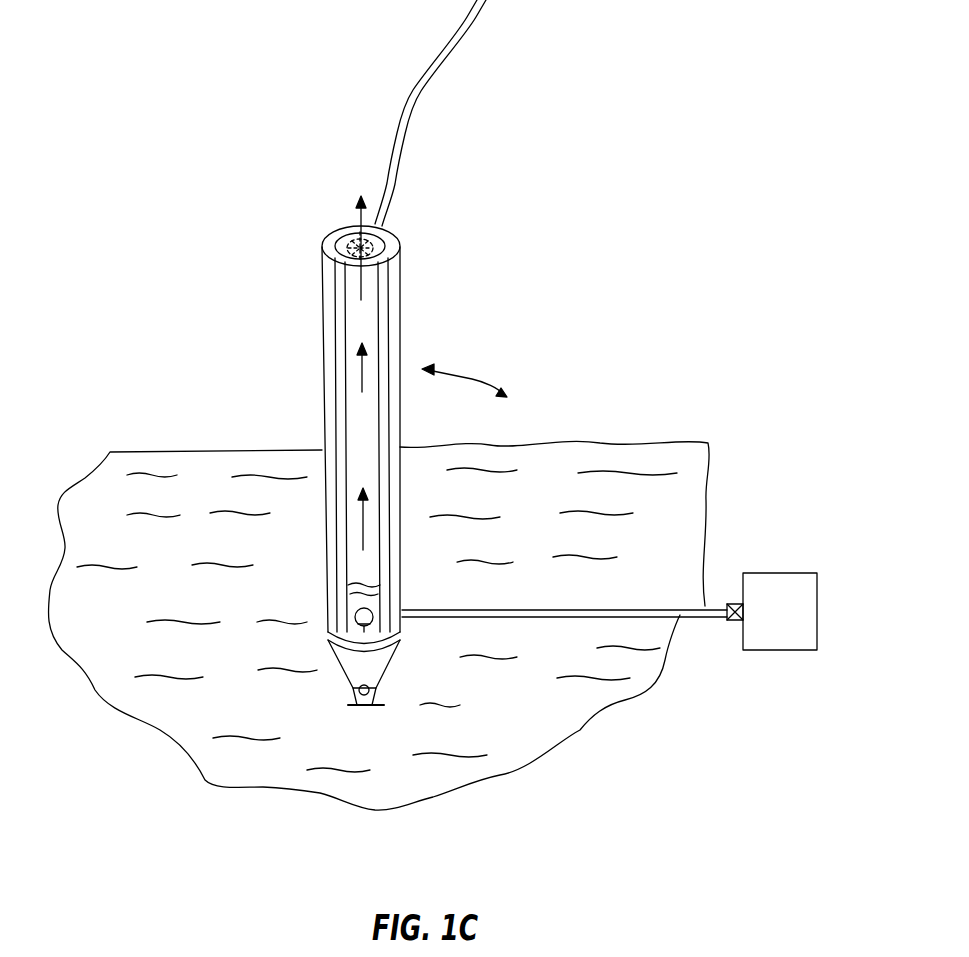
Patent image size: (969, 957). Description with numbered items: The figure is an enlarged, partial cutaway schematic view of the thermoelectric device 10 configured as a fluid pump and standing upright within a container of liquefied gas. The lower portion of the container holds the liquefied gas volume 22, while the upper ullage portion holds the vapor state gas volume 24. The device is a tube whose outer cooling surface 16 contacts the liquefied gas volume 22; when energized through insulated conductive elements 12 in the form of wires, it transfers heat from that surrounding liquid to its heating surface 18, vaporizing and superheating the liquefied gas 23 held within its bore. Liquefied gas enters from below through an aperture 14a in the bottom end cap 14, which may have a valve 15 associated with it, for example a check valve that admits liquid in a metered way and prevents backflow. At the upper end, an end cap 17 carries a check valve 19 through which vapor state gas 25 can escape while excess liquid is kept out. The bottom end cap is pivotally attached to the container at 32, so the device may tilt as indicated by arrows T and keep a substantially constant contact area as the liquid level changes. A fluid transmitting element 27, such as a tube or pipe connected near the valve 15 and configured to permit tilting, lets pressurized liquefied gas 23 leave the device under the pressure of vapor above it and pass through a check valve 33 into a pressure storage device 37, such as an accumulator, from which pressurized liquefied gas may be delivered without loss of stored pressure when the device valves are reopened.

The thermoelectric device 10 is at (223, 191).
The insulated conductive elements 12 is at (423, 88).
The end cap 14 is at (401, 630).
The aperture 14a is at (387, 648).
The valve 15 is at (360, 626).
The cooling surface 16 is at (401, 336).
The end cap 17 is at (327, 238).
The heating surface 18 is at (397, 232).
The check valve 19 is at (347, 223).
The liquefied gas volume 22 is at (250, 605).
The liquefied gas 23 is at (357, 600).
The vapor state gas volume 24 is at (344, 131).
The vapor state gas 25 is at (360, 322).
The fluid transmitting element 27 is at (703, 605).
The pivotal attachment 32 is at (348, 695).
The check valve 33 is at (735, 622).
The pressure storage device 37 is at (783, 595).
The arrows indicating tilt T is at (472, 379).